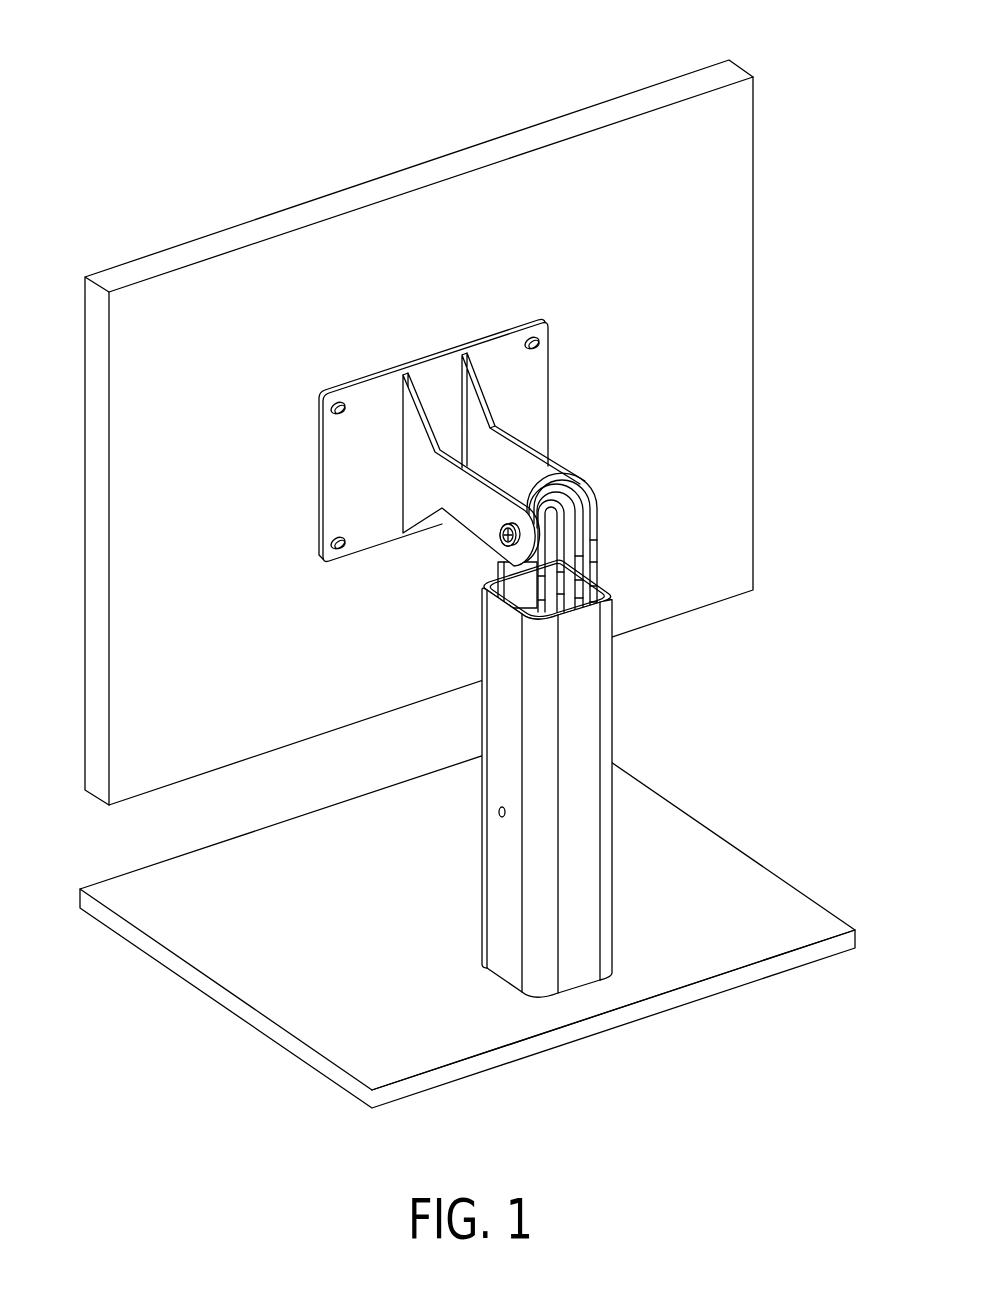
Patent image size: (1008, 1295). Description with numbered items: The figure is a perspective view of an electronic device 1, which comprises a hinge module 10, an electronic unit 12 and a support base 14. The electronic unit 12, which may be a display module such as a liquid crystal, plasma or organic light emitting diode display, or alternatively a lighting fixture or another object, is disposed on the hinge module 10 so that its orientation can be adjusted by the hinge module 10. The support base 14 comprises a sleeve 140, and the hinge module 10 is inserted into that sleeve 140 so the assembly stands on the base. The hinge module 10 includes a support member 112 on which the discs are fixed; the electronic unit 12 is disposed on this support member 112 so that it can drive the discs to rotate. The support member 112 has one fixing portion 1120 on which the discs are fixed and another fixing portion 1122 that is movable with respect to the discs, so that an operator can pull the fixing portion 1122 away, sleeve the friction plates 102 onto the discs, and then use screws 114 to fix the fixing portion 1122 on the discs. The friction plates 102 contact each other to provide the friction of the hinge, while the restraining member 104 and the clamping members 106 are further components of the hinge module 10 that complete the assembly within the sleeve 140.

The electronic device 1 is at (458, 558).
The electronic unit 12 is at (647, 87).
The support base 14 is at (760, 862).
The sleeve 140 is at (582, 778).
The restraining member 104 is at (500, 820).
The support member 112 is at (527, 388).
The fixing portion 1120 is at (527, 448).
The fixing portion 1122 is at (389, 495).
The screws 114 is at (472, 518).
The hinge module 10 is at (671, 519).
The friction plates 102 is at (575, 567).
The clamping members 106 is at (518, 587).